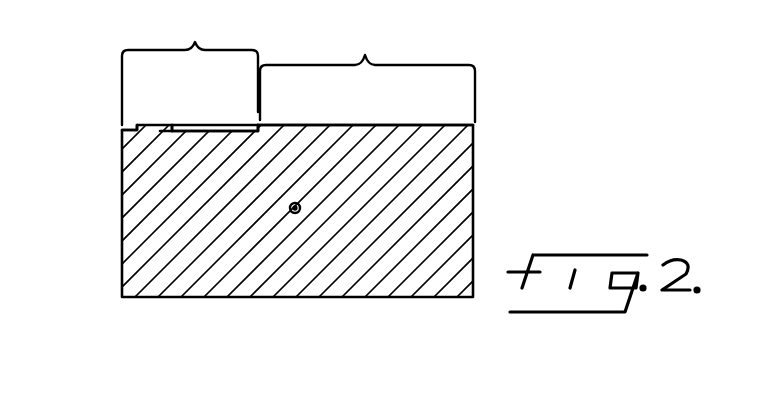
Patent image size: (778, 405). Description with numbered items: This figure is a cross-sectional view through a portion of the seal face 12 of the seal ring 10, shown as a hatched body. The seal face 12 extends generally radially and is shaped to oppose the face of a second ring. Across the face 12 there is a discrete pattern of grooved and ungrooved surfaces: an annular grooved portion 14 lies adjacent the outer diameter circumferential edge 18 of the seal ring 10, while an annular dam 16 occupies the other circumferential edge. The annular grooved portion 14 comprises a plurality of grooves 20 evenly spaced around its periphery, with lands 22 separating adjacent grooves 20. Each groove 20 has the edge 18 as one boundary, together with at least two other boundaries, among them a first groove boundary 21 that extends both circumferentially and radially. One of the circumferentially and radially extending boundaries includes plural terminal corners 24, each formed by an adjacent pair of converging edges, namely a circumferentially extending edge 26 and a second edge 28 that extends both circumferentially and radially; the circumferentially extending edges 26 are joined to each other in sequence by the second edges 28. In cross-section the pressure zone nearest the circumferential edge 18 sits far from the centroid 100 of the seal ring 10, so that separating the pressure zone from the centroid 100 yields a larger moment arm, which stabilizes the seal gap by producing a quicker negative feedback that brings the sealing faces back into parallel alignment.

The seal ring 10 is at (377, 202).
The seal face 12 is at (365, 99).
The annular grooved portion 14 is at (190, 62).
The annular dam 16 is at (367, 68).
The outer diameter circumferential edge 18 is at (377, 202).
The groove 20 is at (88, 133).
The first groove boundary 21 is at (289, 105).
The land 22 is at (215, 94).
The terminal corner 24 is at (125, 104).
The circumferentially extending edge 26 is at (215, 99).
The second edge 28 is at (119, 164).
The centroid 100 is at (285, 276).